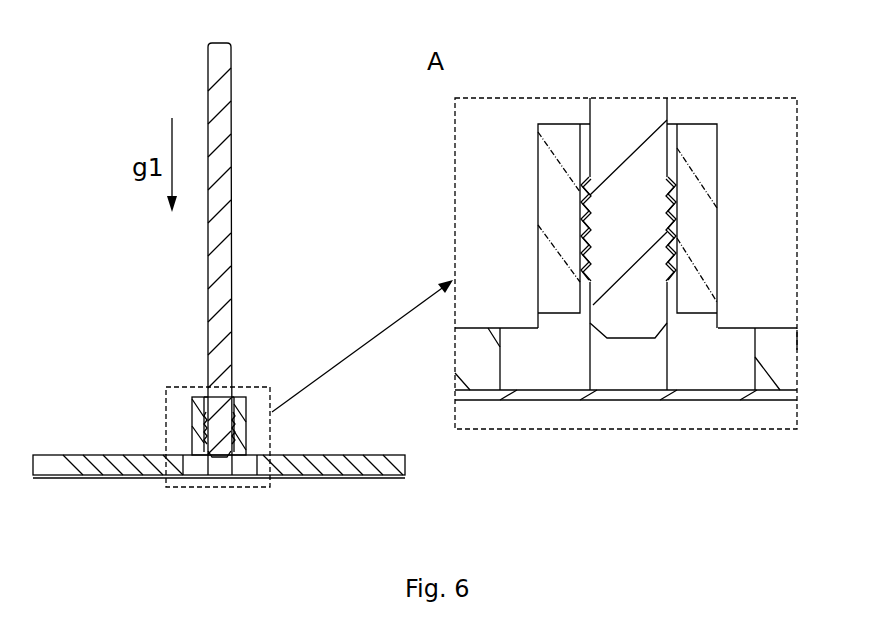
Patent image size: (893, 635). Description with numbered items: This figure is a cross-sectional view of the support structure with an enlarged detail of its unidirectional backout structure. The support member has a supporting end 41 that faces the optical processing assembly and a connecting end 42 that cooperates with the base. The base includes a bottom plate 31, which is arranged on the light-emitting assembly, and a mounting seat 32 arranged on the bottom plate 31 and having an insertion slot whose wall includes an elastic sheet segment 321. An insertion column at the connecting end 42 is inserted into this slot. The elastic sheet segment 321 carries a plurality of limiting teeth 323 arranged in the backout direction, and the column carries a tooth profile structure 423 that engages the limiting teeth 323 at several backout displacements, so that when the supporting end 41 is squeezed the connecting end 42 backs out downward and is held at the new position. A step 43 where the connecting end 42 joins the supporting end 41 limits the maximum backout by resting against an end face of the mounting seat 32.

The bottom plate 31 is at (85, 460).
The mounting seat 32 is at (497, 296).
The supporting end 41 is at (225, 208).
The connecting end 42 is at (218, 430).
The step 43 is at (207, 387).
The elastic sheet segment 321 is at (563, 147).
The limiting teeth 323 is at (587, 268).
The tooth profile structure 423 is at (592, 217).